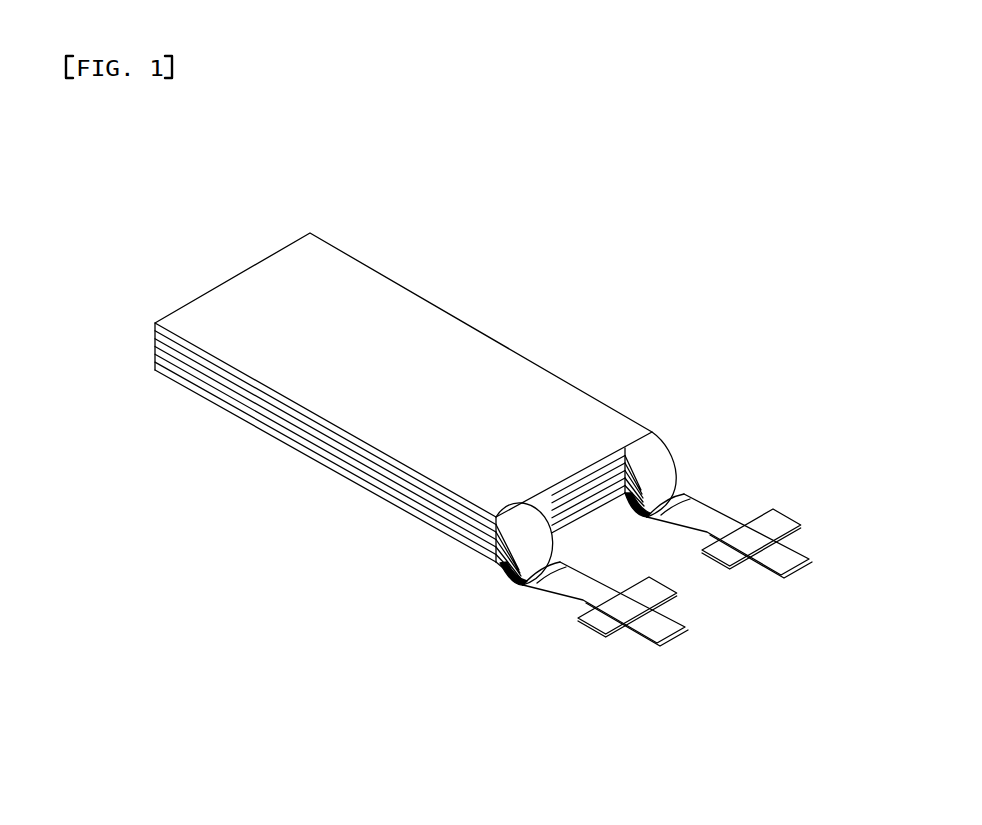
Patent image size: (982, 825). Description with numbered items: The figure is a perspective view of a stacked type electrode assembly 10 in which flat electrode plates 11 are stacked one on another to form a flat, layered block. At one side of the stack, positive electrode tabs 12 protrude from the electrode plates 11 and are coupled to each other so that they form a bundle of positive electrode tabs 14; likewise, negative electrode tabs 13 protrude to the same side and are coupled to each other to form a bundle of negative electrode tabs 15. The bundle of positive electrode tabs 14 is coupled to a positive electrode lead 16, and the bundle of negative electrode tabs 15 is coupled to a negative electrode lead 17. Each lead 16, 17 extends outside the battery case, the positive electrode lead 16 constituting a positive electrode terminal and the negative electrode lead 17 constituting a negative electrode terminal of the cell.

The electrode assembly 10 is at (134, 200).
The electrode plates 11 is at (512, 377).
The positive electrode tabs 12 is at (655, 470).
The negative electrode tabs 13 is at (510, 557).
The bundle of positive electrode tabs 14 is at (688, 500).
The bundle of negative electrode tabs 15 is at (538, 590).
The positive electrode lead 16 is at (782, 558).
The negative electrode lead 17 is at (660, 628).